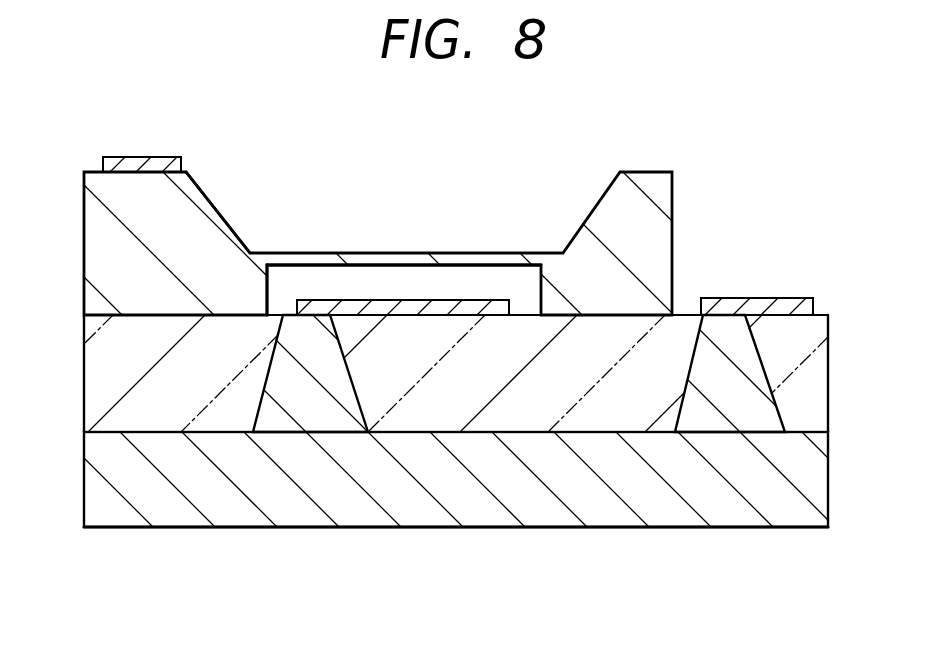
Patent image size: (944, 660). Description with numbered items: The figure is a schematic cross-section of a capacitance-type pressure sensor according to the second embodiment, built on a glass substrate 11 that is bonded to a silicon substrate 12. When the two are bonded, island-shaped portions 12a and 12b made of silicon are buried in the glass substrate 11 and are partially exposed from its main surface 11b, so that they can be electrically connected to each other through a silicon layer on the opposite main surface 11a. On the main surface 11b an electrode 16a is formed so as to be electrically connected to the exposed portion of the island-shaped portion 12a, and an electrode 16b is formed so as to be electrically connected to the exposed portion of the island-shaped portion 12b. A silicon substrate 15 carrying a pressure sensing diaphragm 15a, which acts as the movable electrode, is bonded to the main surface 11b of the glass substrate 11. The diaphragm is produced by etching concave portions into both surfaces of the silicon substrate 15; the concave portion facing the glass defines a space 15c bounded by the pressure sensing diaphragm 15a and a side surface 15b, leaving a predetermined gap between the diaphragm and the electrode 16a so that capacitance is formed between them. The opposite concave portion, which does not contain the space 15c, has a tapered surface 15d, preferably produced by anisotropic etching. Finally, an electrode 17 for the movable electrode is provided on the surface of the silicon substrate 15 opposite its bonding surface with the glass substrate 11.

The glass substrate 11 is at (805, 408).
The main surface 11a is at (693, 530).
The main surface 11b is at (685, 314).
The silicon substrate 12 is at (460, 500).
The island-shaped portion 12a is at (295, 393).
The island-shaped portion 12b is at (743, 353).
The silicon substrate 15 is at (663, 193).
The pressure sensing diaphragm 15a is at (497, 252).
The side surface 15b is at (270, 290).
The space 15c is at (370, 282).
The tapered surface 15d is at (211, 199).
The electrode 16a is at (421, 300).
The electrode 16b is at (783, 305).
The electrode for a movable electrode 17 is at (155, 162).